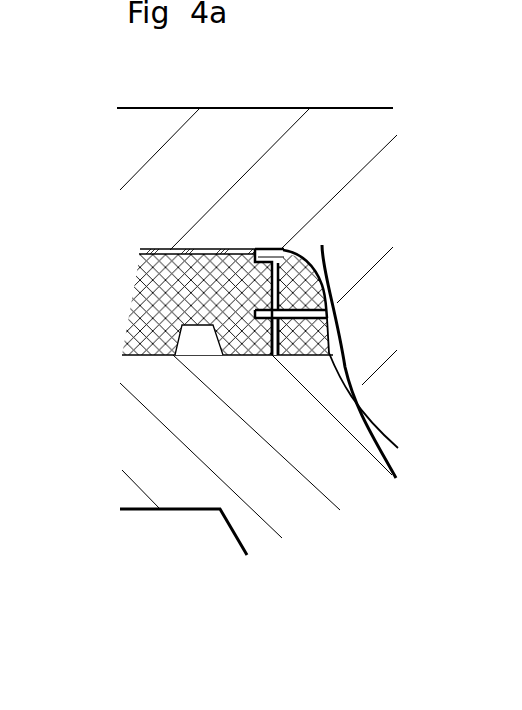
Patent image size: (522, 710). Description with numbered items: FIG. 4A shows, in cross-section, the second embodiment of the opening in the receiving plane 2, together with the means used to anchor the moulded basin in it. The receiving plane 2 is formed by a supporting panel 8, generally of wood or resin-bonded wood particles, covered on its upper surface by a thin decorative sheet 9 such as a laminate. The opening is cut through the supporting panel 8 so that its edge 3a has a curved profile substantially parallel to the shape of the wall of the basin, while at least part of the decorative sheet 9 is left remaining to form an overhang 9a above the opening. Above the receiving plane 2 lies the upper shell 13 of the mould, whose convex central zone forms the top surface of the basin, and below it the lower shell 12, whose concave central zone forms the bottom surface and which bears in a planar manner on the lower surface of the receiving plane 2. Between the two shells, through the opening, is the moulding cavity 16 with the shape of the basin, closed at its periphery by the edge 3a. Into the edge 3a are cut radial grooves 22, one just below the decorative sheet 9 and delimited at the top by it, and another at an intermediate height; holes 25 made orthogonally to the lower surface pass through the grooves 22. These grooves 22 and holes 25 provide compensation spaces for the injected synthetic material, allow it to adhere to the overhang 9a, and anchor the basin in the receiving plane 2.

The upper shell 13 is at (243, 150).
The receiving plane 2 is at (97, 287).
The supporting panel 8 is at (138, 306).
The decorative sheet 9 is at (153, 249).
The overhang 9a is at (263, 249).
The radial groove 22 is at (286, 250).
The hole 25 is at (270, 342).
The edge of the opening 3a is at (322, 245).
The moulding cavity 16 is at (355, 390).
The lower shell 12 is at (178, 478).